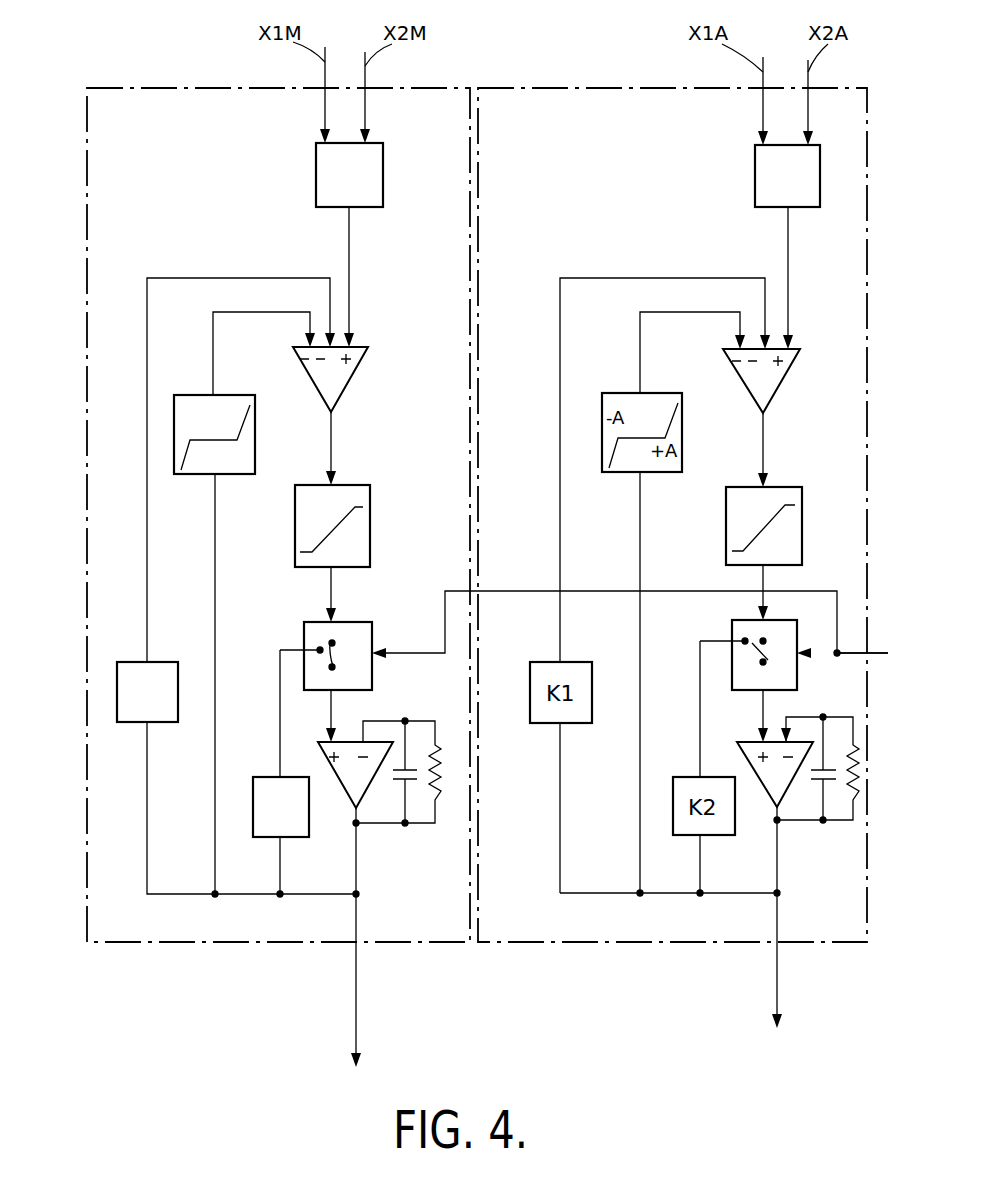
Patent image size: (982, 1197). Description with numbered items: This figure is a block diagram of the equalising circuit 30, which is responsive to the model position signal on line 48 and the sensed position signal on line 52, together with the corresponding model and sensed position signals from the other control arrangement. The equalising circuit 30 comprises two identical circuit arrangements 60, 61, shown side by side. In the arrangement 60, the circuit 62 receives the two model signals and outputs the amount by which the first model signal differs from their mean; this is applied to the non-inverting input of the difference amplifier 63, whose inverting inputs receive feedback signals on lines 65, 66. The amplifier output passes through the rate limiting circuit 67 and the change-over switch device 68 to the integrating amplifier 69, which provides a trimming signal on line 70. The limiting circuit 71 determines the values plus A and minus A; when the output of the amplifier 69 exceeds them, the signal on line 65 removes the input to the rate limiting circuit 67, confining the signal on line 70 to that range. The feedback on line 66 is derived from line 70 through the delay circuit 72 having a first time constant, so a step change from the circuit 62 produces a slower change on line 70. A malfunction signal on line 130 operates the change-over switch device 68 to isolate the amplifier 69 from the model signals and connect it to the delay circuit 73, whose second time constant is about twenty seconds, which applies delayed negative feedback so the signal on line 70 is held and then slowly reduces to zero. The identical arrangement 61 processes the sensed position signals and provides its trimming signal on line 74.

The equalising circuit 30 is at (543, 966).
The line 48 is at (322, 88).
The line 52 is at (760, 103).
The circuit arrangement 60 is at (225, 927).
The circuit arrangement 61 is at (668, 922).
The circuit 62 is at (357, 184).
The difference amplifier 63 is at (330, 378).
The line 65 is at (243, 314).
The line 66 is at (147, 305).
The rate limiting circuit 67 is at (352, 496).
The change-over switch device 68 is at (355, 636).
The integrating amplifier 69 is at (352, 780).
The line 70 is at (358, 978).
The limiting circuit 71 is at (197, 462).
The delay circuit 72 is at (134, 714).
The delay circuit 73 is at (270, 790).
The line 74 is at (779, 975).
The line 130 is at (854, 679).